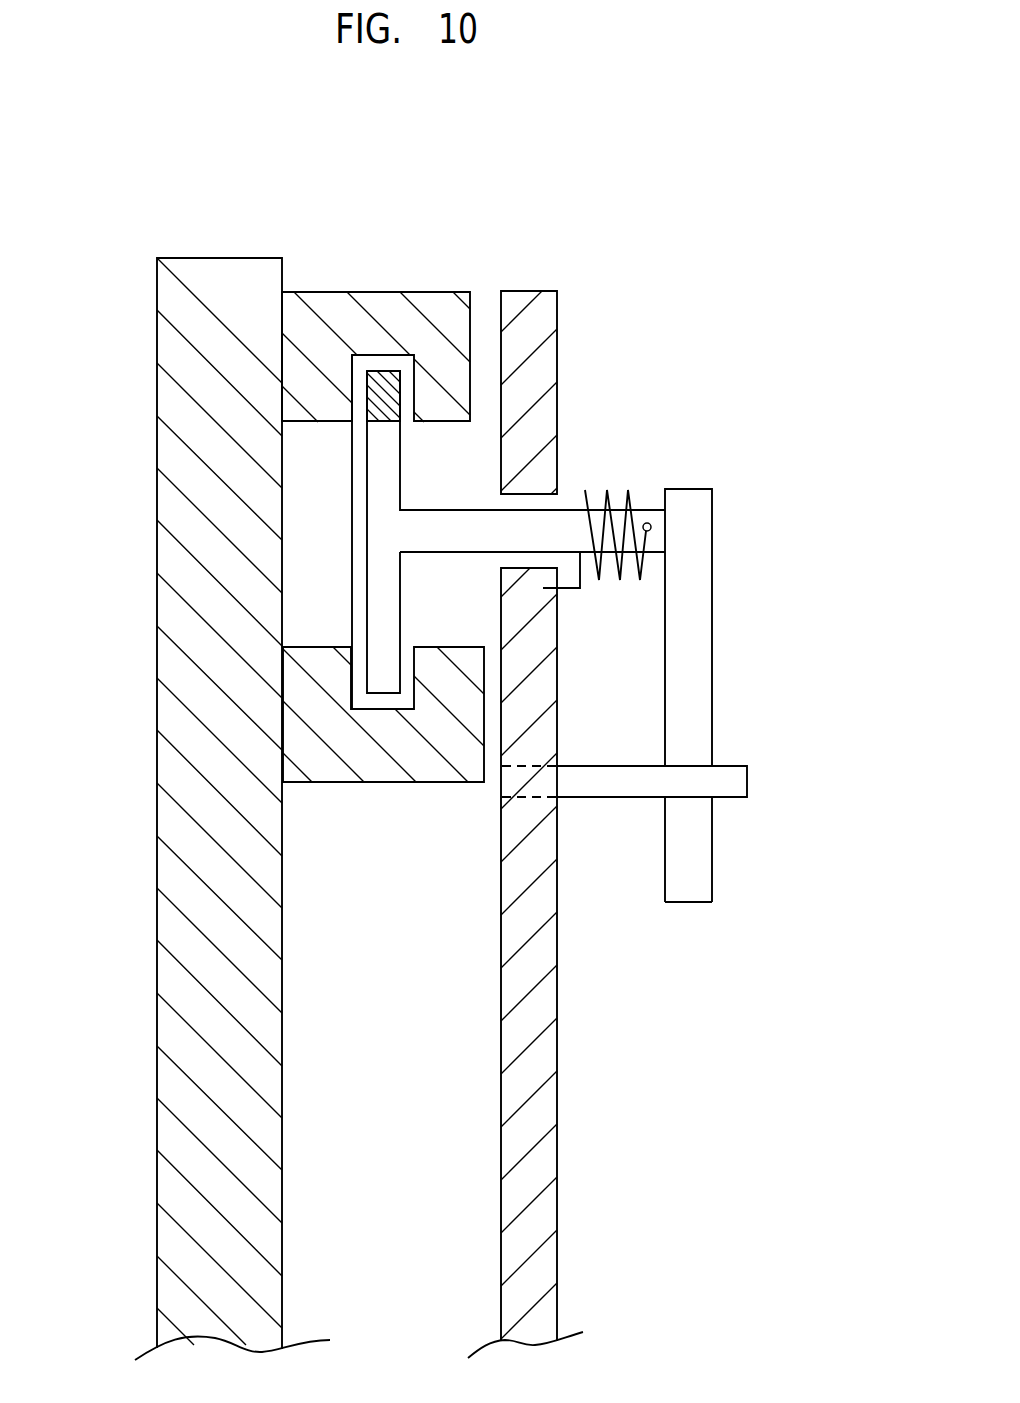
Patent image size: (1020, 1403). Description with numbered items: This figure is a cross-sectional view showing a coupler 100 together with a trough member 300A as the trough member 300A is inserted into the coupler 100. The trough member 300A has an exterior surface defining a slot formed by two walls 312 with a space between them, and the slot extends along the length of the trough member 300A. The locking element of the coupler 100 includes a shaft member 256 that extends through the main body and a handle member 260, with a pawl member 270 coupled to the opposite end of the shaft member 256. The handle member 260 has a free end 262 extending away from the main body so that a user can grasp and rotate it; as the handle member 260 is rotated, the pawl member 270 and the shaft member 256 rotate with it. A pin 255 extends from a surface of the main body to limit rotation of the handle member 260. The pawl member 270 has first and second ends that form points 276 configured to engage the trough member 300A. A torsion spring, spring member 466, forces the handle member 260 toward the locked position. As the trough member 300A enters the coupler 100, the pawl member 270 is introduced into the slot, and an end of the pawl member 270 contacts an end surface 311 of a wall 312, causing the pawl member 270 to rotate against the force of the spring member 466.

The trough member 300A is at (210, 258).
The wall 312 is at (358, 314).
The point 276 is at (383, 397).
The pawl member 270 is at (380, 499).
The end surface 311 is at (390, 710).
The shaft member 256 is at (553, 527).
The spring member 466 is at (628, 492).
The handle member 260 is at (690, 643).
The free end 262 is at (693, 890).
The pin 255 is at (730, 787).
The coupler 100 is at (542, 1168).